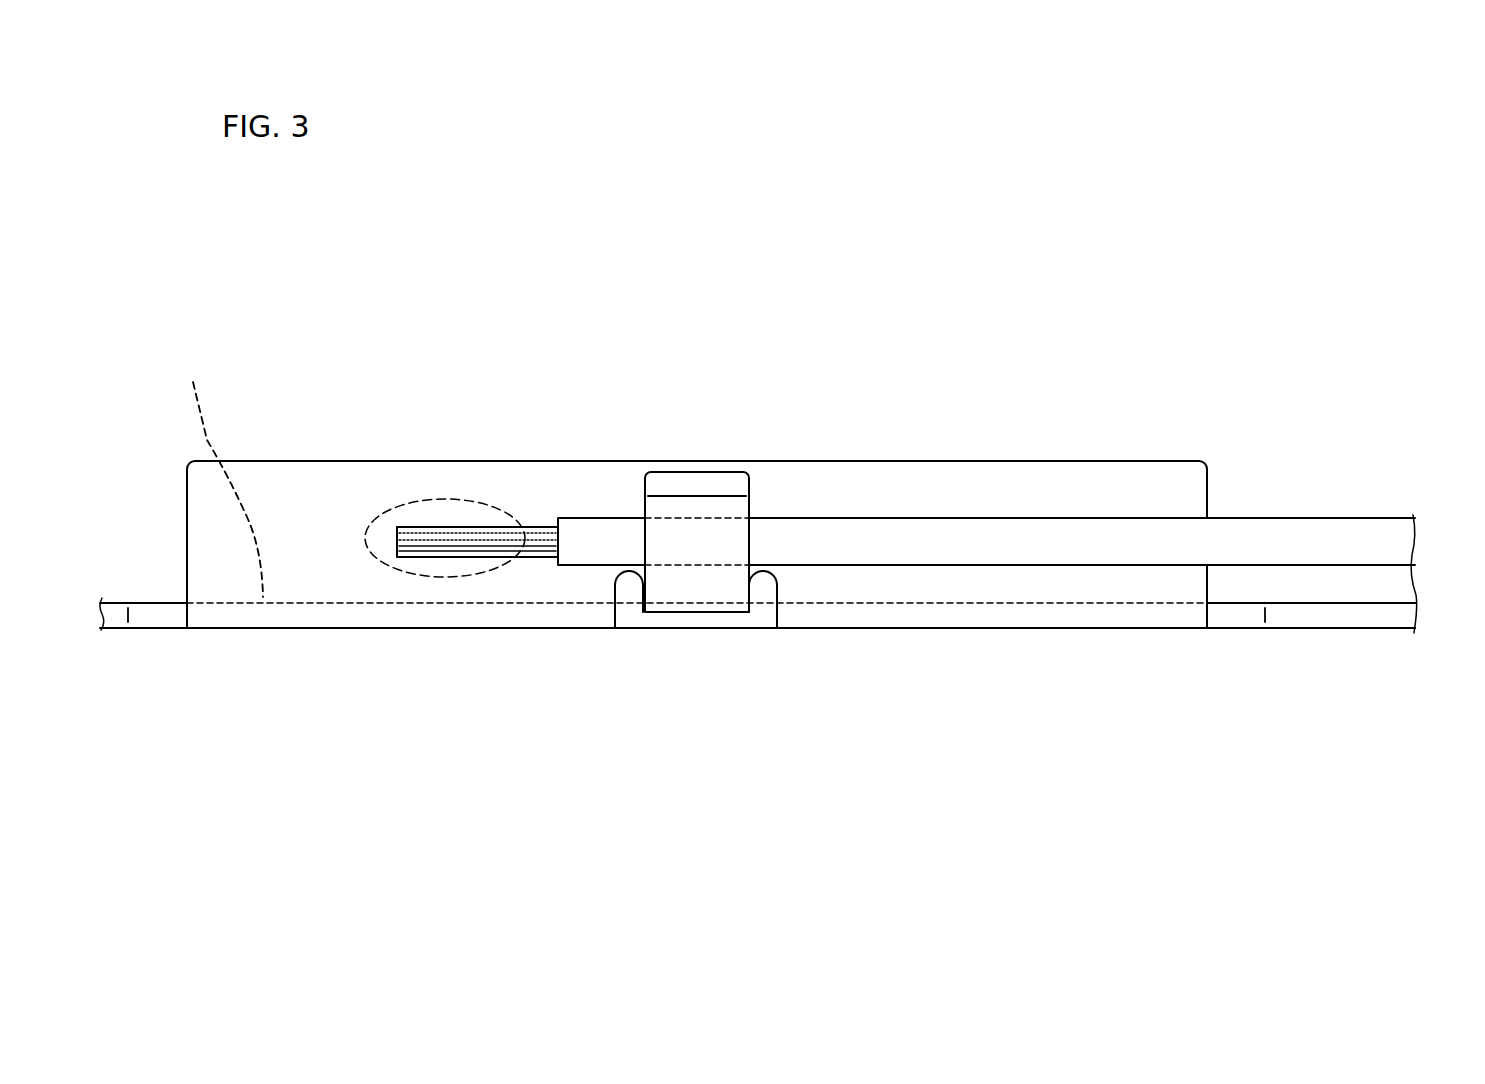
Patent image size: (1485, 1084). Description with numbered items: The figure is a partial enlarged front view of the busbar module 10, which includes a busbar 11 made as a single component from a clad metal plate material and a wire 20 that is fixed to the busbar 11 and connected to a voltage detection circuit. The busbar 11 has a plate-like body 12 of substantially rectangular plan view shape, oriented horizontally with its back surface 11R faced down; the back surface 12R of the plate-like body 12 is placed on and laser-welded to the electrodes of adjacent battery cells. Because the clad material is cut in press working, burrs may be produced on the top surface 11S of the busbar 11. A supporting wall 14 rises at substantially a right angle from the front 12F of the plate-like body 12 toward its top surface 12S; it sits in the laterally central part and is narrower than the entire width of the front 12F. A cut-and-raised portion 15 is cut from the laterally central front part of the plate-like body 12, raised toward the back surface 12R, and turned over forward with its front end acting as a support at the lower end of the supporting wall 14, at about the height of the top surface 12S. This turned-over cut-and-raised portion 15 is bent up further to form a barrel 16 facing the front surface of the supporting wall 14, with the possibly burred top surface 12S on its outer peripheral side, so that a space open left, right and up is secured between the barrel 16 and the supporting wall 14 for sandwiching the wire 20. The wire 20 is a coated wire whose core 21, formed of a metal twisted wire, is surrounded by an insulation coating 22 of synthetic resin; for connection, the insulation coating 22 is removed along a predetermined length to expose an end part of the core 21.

The busbar module 10 is at (1228, 287).
The busbar 11 is at (280, 360).
The top surface of the busbar 11S is at (219, 475).
The back surface of the busbar 11R is at (360, 628).
The plate-like body 12 is at (1408, 618).
The top surface of the plate-like body 12S is at (1283, 600).
The front of the plate-like body 12F is at (1321, 616).
The back surface of the plate-like body 12R is at (1345, 630).
The supporting wall 14 is at (342, 470).
The cut-and-raised portion 15 is at (643, 486).
The barrel 16 is at (723, 542).
The wire 20 is at (505, 636).
The core 21 is at (470, 543).
The insulation coating 22 is at (580, 542).